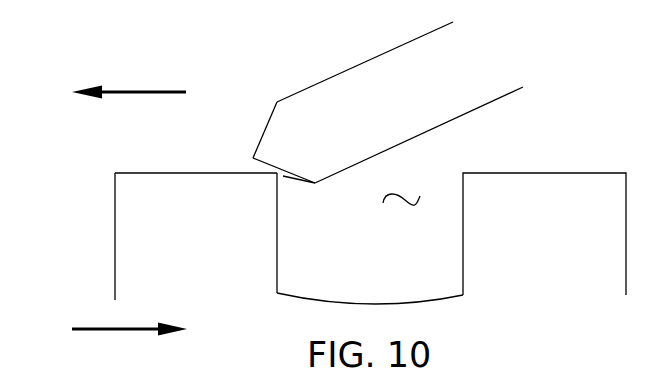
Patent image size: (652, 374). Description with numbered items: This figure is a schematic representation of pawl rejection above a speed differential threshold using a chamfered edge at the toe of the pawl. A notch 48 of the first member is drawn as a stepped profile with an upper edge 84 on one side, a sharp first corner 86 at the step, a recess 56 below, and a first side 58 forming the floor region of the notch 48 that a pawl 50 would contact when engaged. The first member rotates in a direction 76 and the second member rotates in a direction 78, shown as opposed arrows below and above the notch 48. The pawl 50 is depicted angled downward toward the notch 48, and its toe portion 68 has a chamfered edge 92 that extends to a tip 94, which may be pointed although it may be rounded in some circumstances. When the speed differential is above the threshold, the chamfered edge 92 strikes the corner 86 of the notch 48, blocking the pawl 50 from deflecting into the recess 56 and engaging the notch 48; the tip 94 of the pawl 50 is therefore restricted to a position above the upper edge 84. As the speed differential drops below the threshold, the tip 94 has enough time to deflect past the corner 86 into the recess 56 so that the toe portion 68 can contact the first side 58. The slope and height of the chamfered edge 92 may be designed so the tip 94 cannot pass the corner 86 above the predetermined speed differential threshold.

The notch 48 is at (115, 237).
The pawl 50 is at (374, 88).
The recess 56 is at (408, 202).
The first side 58 is at (277, 279).
The toe portion 68 is at (313, 103).
The direction 76 is at (130, 330).
The direction 78 is at (128, 91).
The upper edge 84 is at (159, 172).
The first corner 86 is at (263, 186).
The chamfered edge 92 is at (282, 174).
The tip 94 is at (266, 168).